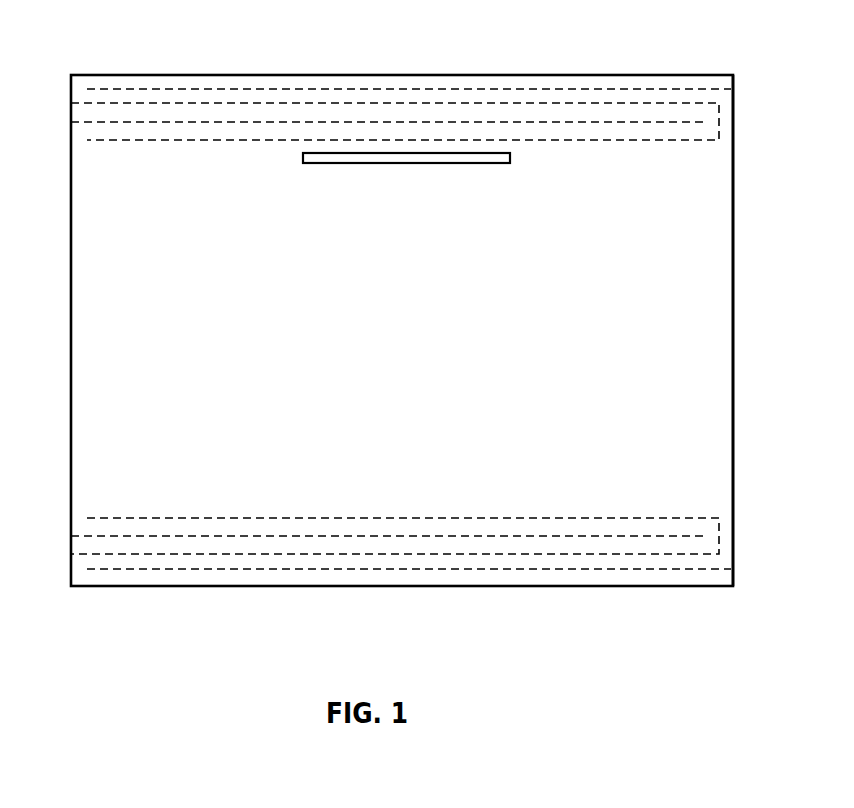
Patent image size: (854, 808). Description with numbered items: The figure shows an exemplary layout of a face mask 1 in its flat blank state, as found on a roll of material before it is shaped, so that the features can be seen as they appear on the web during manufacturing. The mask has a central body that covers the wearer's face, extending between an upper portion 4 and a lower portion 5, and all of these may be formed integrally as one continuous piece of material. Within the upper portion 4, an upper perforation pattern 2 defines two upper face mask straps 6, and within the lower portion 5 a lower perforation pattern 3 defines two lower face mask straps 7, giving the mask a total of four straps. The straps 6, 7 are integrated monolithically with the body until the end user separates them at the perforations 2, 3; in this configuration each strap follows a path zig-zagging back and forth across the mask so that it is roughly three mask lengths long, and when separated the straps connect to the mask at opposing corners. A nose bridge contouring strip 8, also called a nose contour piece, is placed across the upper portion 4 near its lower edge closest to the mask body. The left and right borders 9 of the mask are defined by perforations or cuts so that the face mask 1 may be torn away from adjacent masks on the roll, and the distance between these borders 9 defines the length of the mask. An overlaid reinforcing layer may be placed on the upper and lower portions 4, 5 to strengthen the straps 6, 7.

The face mask 1 is at (209, 314).
The upper perforation pattern 2 is at (178, 103).
The lower perforation pattern 3 is at (268, 571).
The upper portion 4 is at (110, 163).
The lower portion 5 is at (210, 506).
The upper face mask strap 6 is at (110, 115).
The lower face mask strap 7 is at (110, 548).
The nose bridge contouring strip 8 is at (303, 158).
The left and right borders 9 is at (735, 278).